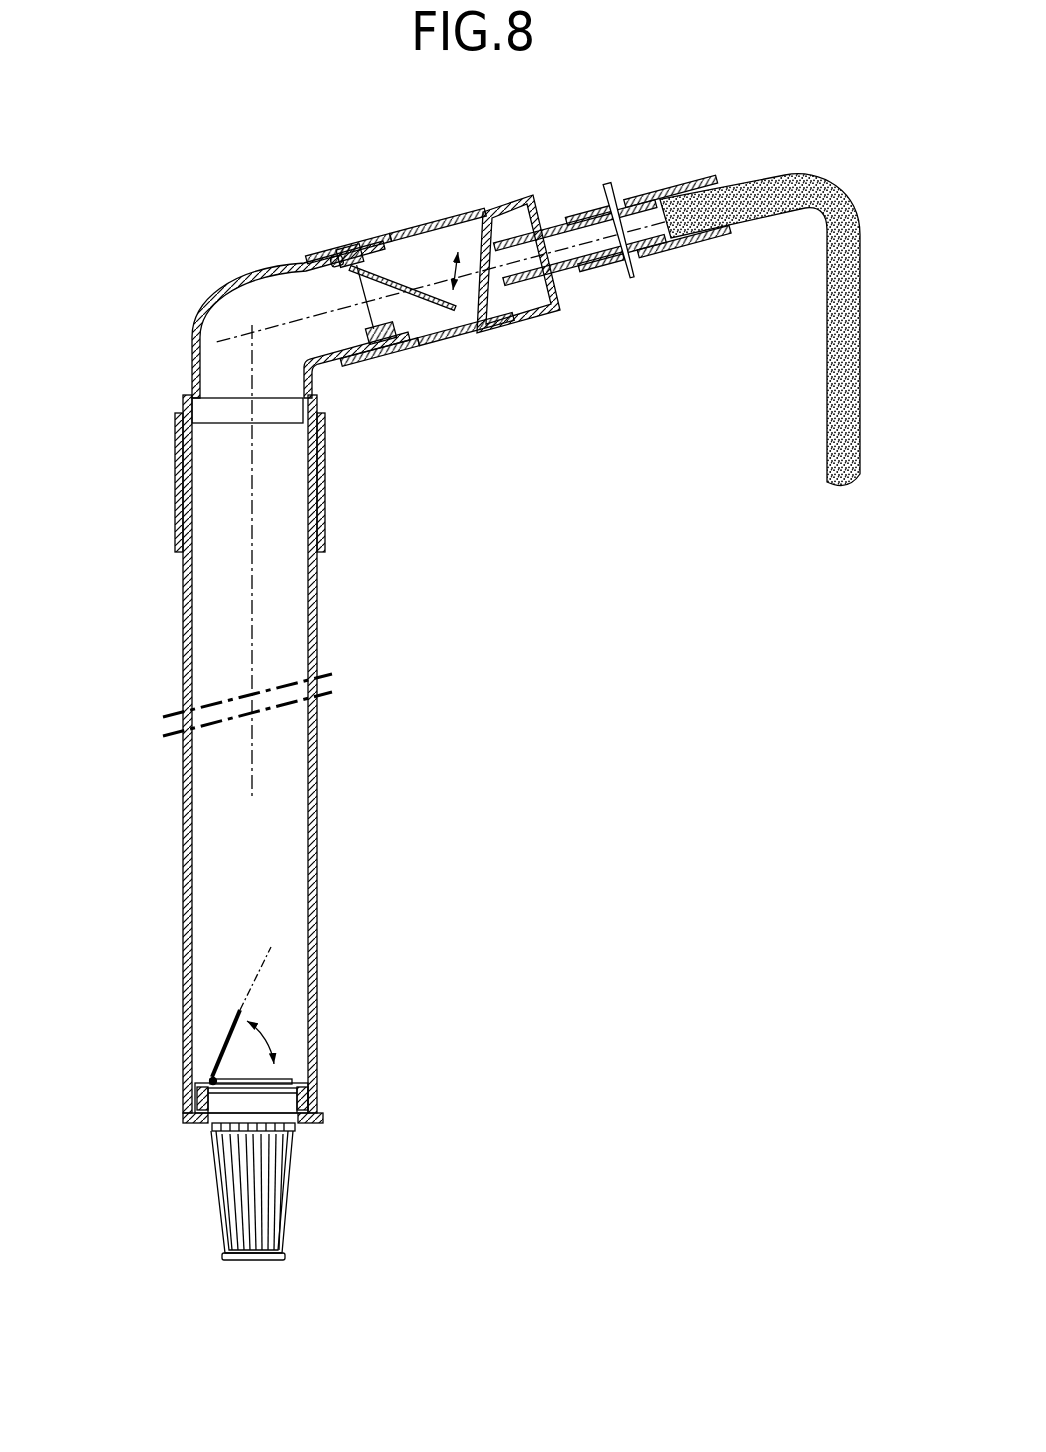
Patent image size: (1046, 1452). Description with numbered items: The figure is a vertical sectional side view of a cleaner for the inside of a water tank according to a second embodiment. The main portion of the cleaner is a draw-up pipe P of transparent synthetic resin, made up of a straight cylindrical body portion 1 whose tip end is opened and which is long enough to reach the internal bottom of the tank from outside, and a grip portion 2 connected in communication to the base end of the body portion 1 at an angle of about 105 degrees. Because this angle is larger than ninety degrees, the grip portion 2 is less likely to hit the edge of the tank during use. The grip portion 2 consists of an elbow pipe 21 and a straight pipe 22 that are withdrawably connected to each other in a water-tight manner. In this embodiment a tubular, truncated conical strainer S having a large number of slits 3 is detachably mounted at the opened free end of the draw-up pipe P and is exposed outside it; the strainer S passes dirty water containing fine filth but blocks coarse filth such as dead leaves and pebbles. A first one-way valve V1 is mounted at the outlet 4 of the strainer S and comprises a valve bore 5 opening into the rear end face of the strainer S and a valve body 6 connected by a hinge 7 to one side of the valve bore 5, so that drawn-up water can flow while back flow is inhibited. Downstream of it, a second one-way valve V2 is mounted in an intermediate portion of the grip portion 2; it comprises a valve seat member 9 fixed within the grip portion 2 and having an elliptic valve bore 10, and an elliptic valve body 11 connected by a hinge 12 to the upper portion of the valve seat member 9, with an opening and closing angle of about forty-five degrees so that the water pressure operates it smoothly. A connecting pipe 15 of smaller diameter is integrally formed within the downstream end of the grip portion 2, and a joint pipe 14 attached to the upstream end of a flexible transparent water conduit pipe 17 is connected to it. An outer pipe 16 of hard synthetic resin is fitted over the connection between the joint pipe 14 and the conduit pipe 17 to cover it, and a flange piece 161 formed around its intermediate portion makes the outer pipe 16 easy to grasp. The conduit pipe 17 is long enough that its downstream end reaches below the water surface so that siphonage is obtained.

The body portion 1 is at (332, 622).
The grip portion 2 is at (337, 123).
The elbow pipe 21 is at (293, 262).
The straight pipe 22 is at (330, 255).
The slits 3 is at (253, 1260).
The outlet 4 is at (287, 1080).
The valve bore 5 is at (247, 1079).
The valve body 6 is at (274, 1060).
The hinge 7 is at (211, 1078).
The valve seat member 9 is at (344, 272).
The valve bore 10 is at (455, 302).
The valve body 11 is at (453, 214).
The hinge 12 is at (373, 252).
The joint pipe 14 is at (550, 226).
The connecting pipe 15 is at (537, 292).
The outer pipe 16 is at (666, 240).
The flange piece 161 is at (618, 198).
The water conduit pipe 17 is at (737, 186).
The draw-up pipe P is at (520, 338).
The strainer S is at (208, 1183).
The first one-way valve V1 is at (217, 1038).
The second one-way valve V2 is at (445, 322).
The connection angle 105 is at (468, 282).